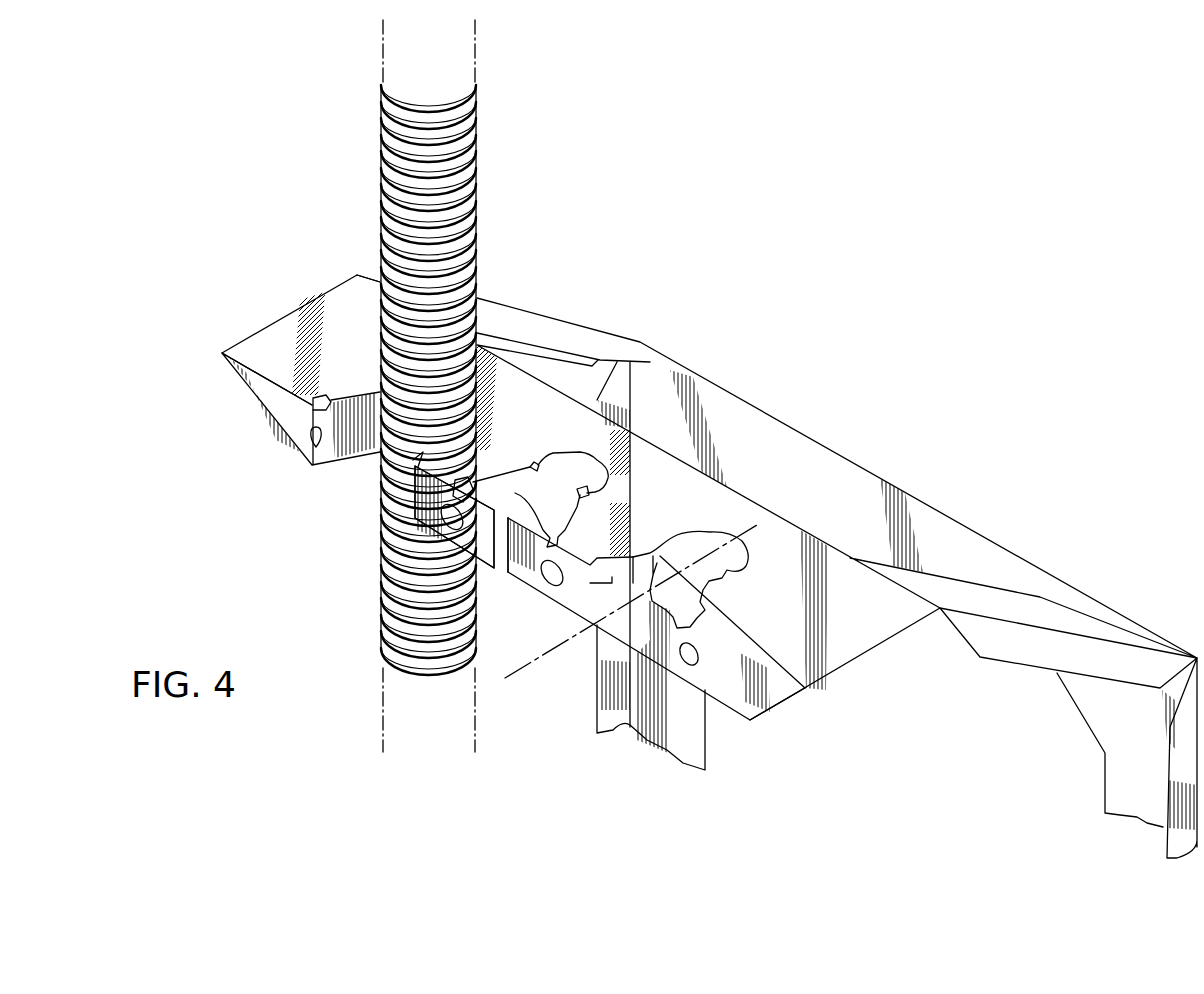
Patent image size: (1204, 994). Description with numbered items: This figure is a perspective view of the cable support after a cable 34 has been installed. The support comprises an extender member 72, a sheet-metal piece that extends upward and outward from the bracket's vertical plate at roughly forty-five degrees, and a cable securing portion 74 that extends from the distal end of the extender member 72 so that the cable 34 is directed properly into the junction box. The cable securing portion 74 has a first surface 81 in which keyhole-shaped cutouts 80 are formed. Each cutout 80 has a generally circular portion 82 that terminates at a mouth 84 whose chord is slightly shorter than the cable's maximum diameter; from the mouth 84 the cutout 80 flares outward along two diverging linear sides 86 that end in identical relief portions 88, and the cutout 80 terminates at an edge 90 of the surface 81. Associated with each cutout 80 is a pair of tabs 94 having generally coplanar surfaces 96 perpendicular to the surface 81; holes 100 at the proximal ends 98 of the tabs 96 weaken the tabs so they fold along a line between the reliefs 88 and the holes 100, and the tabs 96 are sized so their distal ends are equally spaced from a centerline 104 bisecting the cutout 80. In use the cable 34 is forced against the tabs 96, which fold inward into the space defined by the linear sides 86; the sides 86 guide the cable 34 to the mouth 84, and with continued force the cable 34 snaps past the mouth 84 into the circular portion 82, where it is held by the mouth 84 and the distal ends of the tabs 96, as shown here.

The cable 34 is at (478, 254).
The extender member 72 is at (598, 334).
The cable securing portion 74 is at (278, 316).
The cutout 80 is at (526, 456).
The first surface 81 is at (367, 328).
The circular portion 82 is at (572, 454).
The mouth 84 is at (533, 463).
The linear sides 86 is at (708, 592).
The relief portions 88 is at (475, 490).
The edge 90 is at (265, 377).
The pair of tabs 94 is at (497, 573).
The coplanar surfaces of the tabs 96 is at (547, 587).
The proximal ends of the tabs 98 is at (692, 687).
The holes 100 is at (310, 437).
The centerline 104 is at (527, 662).